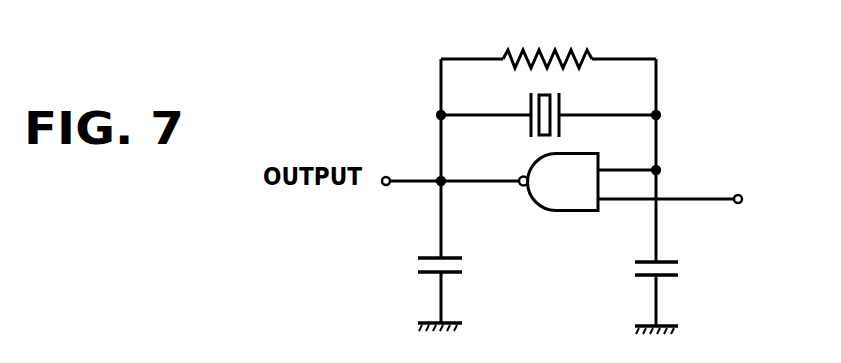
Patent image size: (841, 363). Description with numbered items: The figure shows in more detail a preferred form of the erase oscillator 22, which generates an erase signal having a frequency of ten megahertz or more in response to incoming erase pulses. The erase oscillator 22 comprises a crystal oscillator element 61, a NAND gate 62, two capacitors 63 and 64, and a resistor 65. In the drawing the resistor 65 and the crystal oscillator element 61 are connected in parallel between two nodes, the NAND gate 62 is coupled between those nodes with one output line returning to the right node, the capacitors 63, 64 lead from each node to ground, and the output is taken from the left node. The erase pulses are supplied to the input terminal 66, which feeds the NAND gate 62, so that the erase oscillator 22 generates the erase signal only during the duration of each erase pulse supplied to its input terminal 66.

The erase oscillator 22 is at (693, 72).
The crystal oscillator element 61 is at (562, 109).
The NAND gate 62 is at (586, 211).
The capacitor 63 is at (448, 256).
The capacitor 64 is at (665, 261).
The resistor 65 is at (545, 49).
The input terminal 66 is at (739, 194).